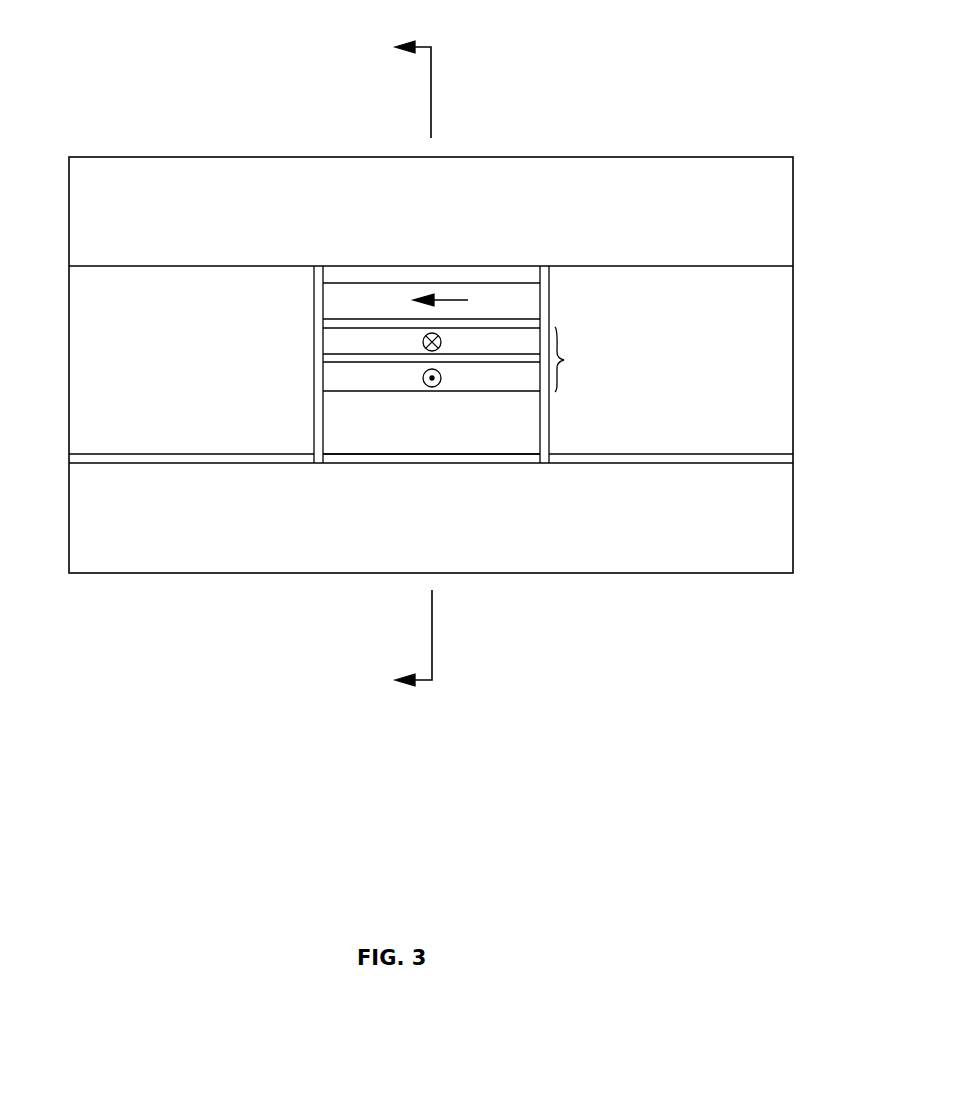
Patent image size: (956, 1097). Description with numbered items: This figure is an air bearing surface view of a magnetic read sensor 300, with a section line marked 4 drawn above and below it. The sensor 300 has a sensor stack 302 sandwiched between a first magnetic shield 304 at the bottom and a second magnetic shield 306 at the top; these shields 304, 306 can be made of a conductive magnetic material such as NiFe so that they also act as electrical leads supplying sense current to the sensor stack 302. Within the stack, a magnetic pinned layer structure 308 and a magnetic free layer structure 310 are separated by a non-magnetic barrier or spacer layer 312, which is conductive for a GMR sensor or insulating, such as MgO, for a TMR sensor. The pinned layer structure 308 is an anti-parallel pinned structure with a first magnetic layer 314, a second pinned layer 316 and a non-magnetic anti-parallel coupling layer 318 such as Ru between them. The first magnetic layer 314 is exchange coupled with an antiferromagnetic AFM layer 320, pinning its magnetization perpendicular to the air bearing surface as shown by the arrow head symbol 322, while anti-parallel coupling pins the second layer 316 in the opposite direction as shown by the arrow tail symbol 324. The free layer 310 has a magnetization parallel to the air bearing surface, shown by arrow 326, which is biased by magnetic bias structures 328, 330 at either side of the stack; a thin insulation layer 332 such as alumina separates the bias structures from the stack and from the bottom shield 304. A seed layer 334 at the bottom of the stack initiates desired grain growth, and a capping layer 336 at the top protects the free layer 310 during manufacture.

The section line of FIG. 4 is at (399, 355).
The magnetic read sensor 300 is at (505, 150).
The sensor stack 302 is at (301, 463).
The first magnetic shield 304 is at (386, 519).
The second magnetic shield 306 is at (476, 208).
The magnetic pinned layer structure 308 is at (564, 362).
The magnetic free layer structure 310 is at (400, 300).
The non-magnetic barrier or spacer layer 312 is at (540, 324).
The first magnetic layer (AP1) 314 is at (391, 377).
The second pinned layer (AP2) 316 is at (391, 340).
The anti-parallel coupling layer 318 is at (332, 358).
The AFM layer 320 is at (470, 422).
The arrow head symbol 322 is at (441, 378).
The arrow tail symbol 324 is at (441, 342).
The arrow 326 is at (443, 301).
The magnetic bias structure 328 is at (646, 358).
The magnetic bias structure 330 is at (183, 357).
The insulation layer 332 is at (192, 460).
The seed layer 334 is at (468, 459).
The capping layer 336 is at (427, 274).